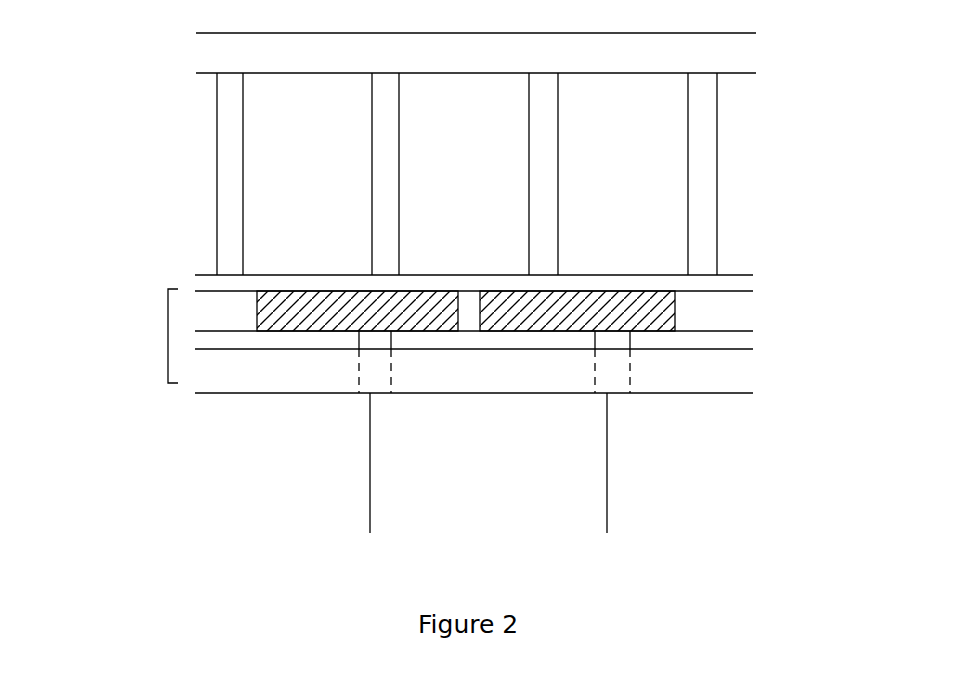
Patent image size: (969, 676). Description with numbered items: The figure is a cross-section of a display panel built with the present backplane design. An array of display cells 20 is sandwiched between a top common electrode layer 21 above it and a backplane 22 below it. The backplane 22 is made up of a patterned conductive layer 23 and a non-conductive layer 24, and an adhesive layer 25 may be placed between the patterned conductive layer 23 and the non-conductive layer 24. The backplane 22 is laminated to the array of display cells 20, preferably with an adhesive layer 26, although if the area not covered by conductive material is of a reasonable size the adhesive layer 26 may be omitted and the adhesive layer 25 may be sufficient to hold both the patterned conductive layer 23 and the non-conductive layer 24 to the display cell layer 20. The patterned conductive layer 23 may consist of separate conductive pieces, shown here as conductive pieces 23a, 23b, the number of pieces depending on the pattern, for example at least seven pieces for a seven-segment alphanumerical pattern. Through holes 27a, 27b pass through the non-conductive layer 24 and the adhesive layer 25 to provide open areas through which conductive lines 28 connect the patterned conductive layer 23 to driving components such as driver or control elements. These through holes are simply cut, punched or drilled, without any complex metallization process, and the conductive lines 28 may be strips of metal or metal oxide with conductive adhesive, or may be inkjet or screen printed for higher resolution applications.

The array of display cells 20 is at (199, 163).
The top common electrode layer 21 is at (208, 52).
The backplane 22 is at (168, 328).
The patterned conductive layer 23 is at (483, 376).
The conductive piece 23a is at (300, 322).
The conductive piece 23b is at (610, 319).
The non-conductive layer 24 is at (737, 375).
The adhesive layer 25 is at (750, 347).
The adhesive layer 26 is at (752, 283).
The through hole 27a is at (358, 375).
The through hole 27b is at (628, 374).
The conductive lines 28 is at (607, 455).